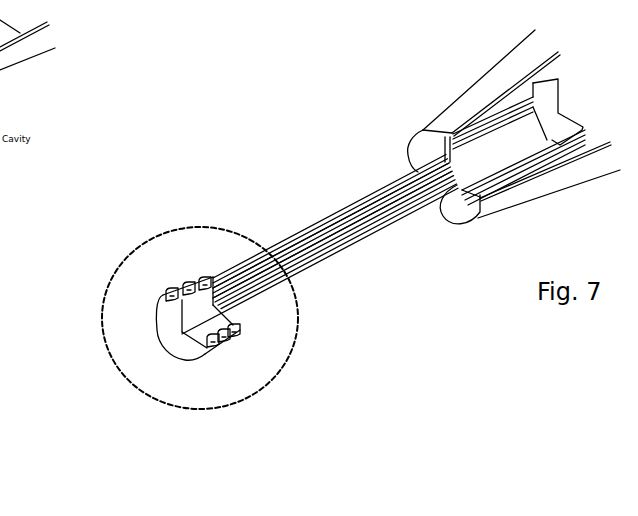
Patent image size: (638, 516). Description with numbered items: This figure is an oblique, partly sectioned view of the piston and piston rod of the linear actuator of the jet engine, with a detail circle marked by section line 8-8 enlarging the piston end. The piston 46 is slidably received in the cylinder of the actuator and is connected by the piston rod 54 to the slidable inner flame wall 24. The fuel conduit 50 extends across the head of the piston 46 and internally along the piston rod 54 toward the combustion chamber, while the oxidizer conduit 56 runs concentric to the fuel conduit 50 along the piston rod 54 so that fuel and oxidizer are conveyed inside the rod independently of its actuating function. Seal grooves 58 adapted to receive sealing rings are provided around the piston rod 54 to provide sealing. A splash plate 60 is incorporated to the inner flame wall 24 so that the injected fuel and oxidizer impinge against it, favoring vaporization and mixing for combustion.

The section line / detail view indicator 8-8 is at (107, 356).
The inner flame wall 24 is at (458, 114).
The piston 46 is at (157, 310).
The fuel conduit 50 is at (334, 222).
The piston rod 54 is at (331, 225).
The oxidizer conduit 56 is at (332, 234).
The seal grooves 58 is at (212, 280).
The splash plate 60 is at (530, 98).